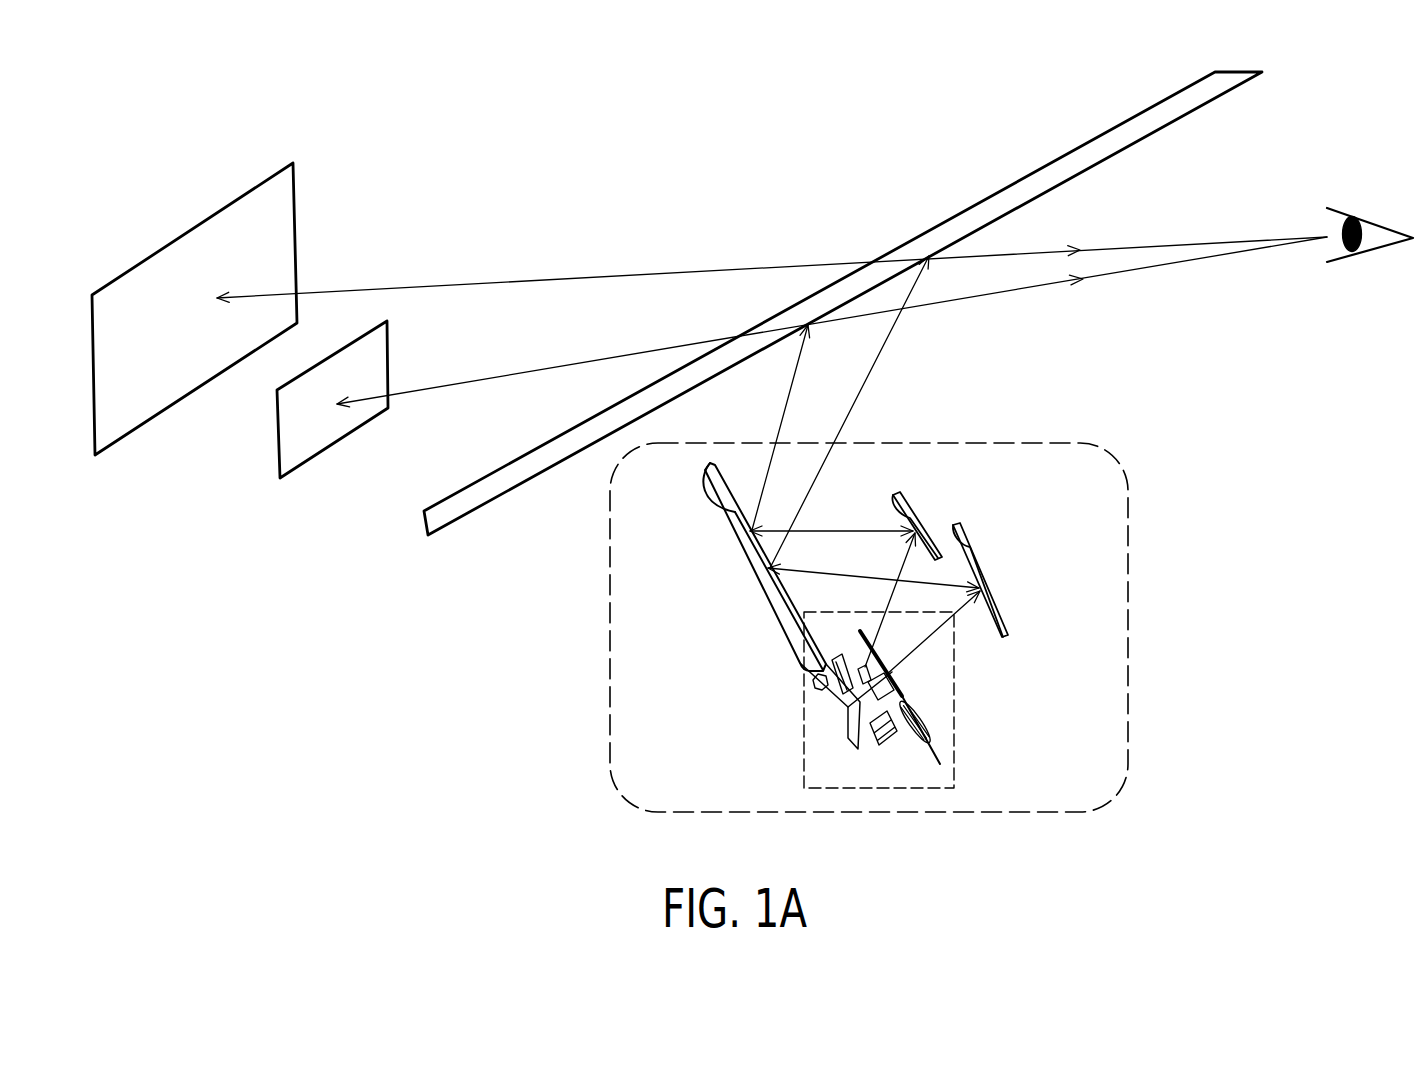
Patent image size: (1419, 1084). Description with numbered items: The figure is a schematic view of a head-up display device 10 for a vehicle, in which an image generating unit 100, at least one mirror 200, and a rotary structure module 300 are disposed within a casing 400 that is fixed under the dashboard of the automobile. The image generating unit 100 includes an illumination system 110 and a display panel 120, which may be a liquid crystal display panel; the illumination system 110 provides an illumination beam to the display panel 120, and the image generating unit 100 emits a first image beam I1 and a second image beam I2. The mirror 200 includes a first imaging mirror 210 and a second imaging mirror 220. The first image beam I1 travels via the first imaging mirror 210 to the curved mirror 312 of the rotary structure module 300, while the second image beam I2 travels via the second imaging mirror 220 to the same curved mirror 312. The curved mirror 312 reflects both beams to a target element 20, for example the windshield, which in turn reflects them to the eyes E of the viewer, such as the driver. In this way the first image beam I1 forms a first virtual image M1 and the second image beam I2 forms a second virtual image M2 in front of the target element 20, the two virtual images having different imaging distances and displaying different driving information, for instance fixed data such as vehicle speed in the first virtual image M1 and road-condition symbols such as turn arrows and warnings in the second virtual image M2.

The head-up display device 10 is at (1172, 535).
The target element 20 is at (1188, 102).
The image generating unit 100 is at (958, 739).
The illumination system 110 is at (843, 716).
The display panel 120 is at (905, 682).
The mirror 200 is at (1032, 468).
The first imaging mirror 210 is at (912, 505).
The second imaging mirror 220 is at (968, 543).
The rotary structure module 300 is at (737, 569).
The curved mirror 312 is at (773, 607).
The casing 400 is at (1002, 442).
The eyes E is at (1343, 250).
The first virtual image M1 is at (377, 372).
The second virtual image M2 is at (287, 239).
The first image beam I1 is at (905, 558).
The second image beam I2 is at (957, 611).